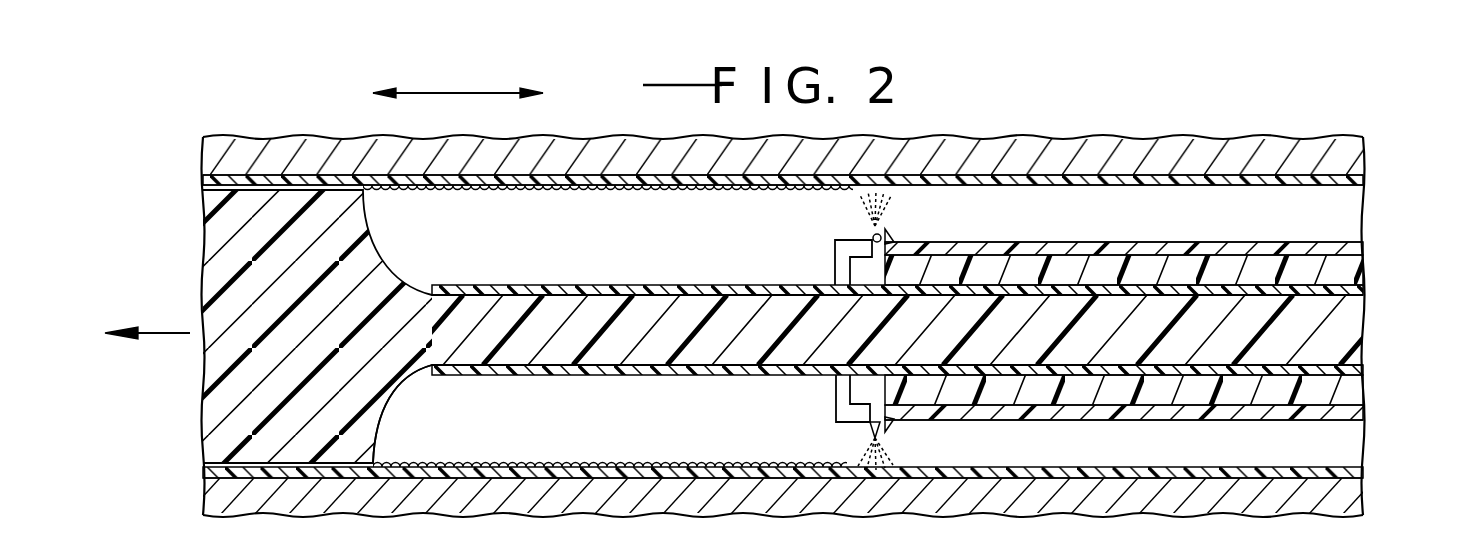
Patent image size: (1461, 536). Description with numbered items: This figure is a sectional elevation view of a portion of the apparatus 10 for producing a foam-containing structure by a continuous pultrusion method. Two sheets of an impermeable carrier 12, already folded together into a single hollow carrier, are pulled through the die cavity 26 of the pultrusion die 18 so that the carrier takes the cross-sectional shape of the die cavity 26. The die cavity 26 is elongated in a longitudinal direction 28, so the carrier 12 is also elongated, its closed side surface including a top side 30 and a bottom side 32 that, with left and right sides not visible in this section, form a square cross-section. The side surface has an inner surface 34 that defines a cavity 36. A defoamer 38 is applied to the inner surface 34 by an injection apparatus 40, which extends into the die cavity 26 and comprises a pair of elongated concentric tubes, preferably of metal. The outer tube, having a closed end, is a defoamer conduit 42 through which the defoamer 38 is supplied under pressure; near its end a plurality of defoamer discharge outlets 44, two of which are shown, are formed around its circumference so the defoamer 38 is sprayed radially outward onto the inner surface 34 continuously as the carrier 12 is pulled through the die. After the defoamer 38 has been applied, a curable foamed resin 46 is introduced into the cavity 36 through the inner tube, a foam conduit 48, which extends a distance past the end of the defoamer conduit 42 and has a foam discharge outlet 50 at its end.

The apparatus 10 is at (233, 110).
The impermeable carrier 12 is at (1330, 185).
The pultrusion die 18 is at (1086, 147).
The die cavity 26 is at (1165, 182).
The longitudinal direction 28 is at (445, 97).
The top side 30 is at (1356, 182).
The bottom side 32 is at (1345, 472).
The inner surface 34 is at (1308, 462).
The cavity 36 is at (1330, 217).
The defoamer 38 is at (890, 205).
The injection apparatus 40 is at (995, 235).
The defoamer conduit 42 is at (1038, 252).
The defoamer discharge outlets 44 is at (873, 232).
The curable foamed resin 46 is at (363, 264).
The foam conduit 48 is at (484, 285).
The foam discharge outlet 50 is at (417, 377).